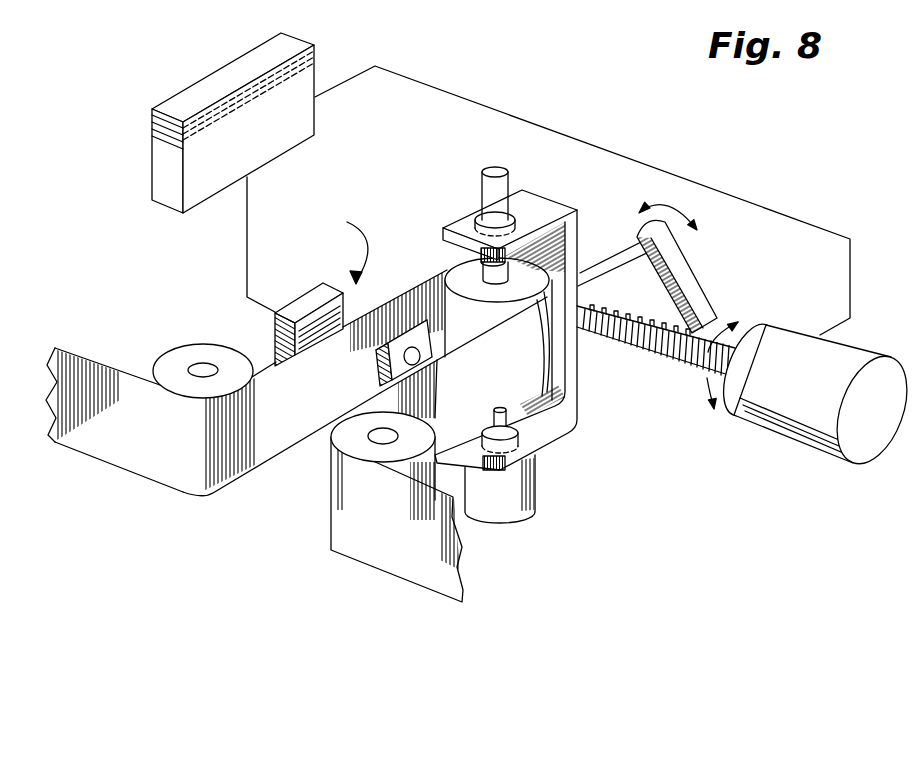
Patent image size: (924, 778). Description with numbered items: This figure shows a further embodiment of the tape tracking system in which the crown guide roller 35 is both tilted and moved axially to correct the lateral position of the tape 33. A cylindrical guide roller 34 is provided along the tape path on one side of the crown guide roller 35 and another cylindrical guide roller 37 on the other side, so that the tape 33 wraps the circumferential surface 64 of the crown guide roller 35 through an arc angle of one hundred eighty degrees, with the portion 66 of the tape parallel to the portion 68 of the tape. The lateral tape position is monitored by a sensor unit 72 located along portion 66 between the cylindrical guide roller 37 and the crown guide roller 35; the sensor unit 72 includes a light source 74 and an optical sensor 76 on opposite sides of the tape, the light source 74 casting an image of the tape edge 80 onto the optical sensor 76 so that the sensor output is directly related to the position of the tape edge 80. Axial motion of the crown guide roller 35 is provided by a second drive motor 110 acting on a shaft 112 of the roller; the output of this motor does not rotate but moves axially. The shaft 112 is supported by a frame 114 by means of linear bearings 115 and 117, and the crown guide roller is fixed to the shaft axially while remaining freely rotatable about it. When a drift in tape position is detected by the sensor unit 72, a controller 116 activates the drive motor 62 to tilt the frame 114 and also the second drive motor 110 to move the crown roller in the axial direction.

The tape 33 is at (113, 450).
The cylindrical guide roller 34 is at (360, 447).
The crown guide roller 35 is at (477, 247).
The cylindrical guide roller 37 is at (173, 358).
The motor 62 is at (847, 363).
The circumferential surface 64 is at (443, 300).
The portion of the tape 66 is at (242, 483).
The portion of the tape 68 is at (537, 365).
The sensor unit 72 is at (345, 248).
The light source 74 is at (400, 365).
The optical sensor 76 is at (312, 300).
The tape edge 80 is at (382, 300).
The second drive motor 110 is at (510, 505).
The shaft 112 is at (495, 168).
The frame 114 is at (537, 212).
The linear bearing 115 is at (479, 213).
The controller 116 is at (197, 93).
The linear bearing 117 is at (520, 425).